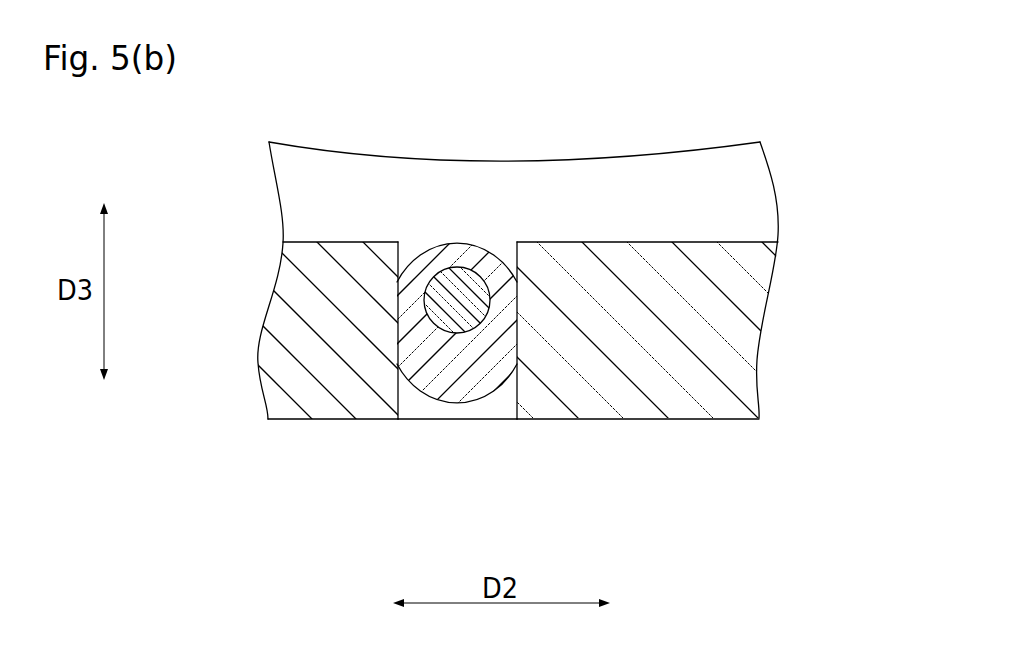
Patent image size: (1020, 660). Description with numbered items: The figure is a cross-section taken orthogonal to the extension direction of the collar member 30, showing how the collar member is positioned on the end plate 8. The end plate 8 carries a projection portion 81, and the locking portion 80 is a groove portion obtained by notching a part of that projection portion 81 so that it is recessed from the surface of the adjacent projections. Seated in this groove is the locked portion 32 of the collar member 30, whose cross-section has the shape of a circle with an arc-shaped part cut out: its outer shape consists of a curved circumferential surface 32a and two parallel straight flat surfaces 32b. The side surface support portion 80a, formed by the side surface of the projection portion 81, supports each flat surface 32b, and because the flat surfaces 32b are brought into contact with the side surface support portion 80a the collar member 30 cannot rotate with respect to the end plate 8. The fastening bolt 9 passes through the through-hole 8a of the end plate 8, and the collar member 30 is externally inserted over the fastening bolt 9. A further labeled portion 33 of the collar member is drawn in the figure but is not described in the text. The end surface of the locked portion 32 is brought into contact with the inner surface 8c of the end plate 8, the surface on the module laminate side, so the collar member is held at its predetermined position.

The end plate 8 is at (518, 280).
The projection portion 81 is at (268, 398).
The through-hole 8a is at (305, 420).
The inner surface 8c is at (485, 406).
The flat surface 32b is at (398, 320).
The locked portion 32 is at (432, 241).
The collar member 30 is at (460, 241).
The locking portion 80 is at (427, 419).
The side surface support portion 80a is at (512, 266).
The circumferential surface 32a is at (478, 270).
The core portion 33 is at (428, 318).
The fastening bolt 9 is at (466, 333).